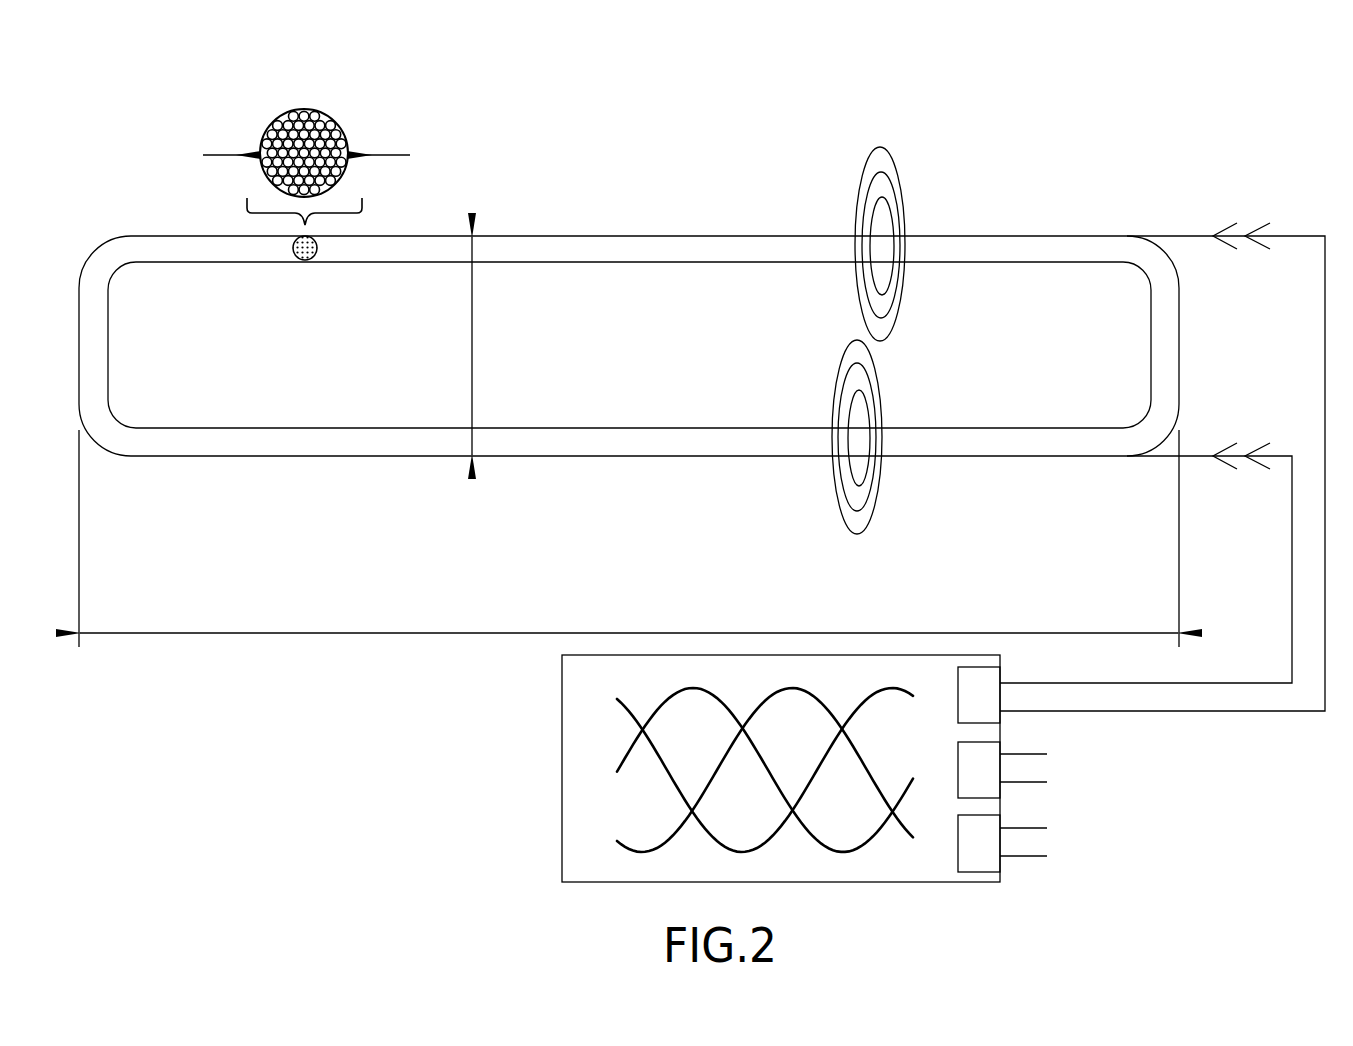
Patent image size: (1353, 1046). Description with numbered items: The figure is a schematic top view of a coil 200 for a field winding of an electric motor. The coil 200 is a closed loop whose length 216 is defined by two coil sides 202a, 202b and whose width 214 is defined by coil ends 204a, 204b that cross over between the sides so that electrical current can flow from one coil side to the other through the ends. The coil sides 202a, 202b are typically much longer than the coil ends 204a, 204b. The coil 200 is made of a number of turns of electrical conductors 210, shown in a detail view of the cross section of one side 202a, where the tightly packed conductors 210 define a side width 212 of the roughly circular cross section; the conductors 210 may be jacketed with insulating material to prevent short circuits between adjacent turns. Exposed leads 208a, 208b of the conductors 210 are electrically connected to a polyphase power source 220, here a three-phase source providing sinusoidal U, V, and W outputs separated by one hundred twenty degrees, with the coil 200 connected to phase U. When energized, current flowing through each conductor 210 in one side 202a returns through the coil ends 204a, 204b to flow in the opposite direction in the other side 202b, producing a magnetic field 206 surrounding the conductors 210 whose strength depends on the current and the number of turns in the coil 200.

The coil 200 is at (686, 116).
The coil side 202a is at (602, 236).
The coil side 202b is at (596, 427).
The coil end 204a is at (107, 352).
The coil end 204b is at (1180, 340).
The magnetic field 206 is at (878, 148).
The exposed lead 208a is at (1177, 234).
The exposed lead 208b is at (1170, 458).
The electrical conductors 210 is at (318, 108).
The side width 212 is at (397, 155).
The width 214 is at (472, 342).
The length 216 is at (433, 633).
The polyphase power source 220 is at (562, 768).